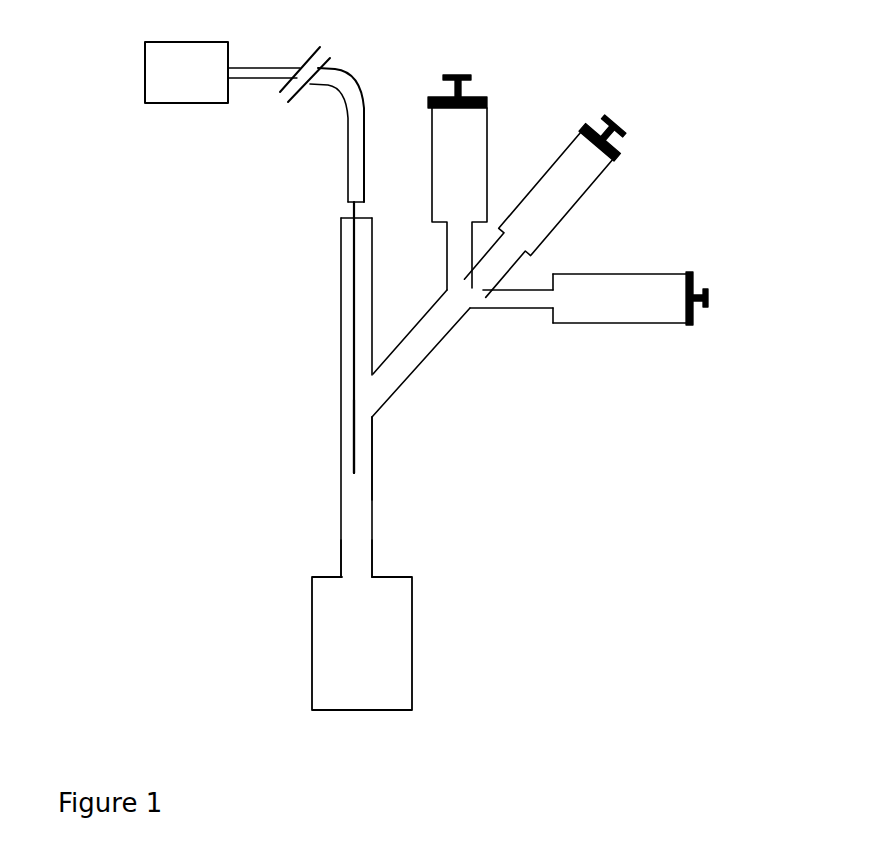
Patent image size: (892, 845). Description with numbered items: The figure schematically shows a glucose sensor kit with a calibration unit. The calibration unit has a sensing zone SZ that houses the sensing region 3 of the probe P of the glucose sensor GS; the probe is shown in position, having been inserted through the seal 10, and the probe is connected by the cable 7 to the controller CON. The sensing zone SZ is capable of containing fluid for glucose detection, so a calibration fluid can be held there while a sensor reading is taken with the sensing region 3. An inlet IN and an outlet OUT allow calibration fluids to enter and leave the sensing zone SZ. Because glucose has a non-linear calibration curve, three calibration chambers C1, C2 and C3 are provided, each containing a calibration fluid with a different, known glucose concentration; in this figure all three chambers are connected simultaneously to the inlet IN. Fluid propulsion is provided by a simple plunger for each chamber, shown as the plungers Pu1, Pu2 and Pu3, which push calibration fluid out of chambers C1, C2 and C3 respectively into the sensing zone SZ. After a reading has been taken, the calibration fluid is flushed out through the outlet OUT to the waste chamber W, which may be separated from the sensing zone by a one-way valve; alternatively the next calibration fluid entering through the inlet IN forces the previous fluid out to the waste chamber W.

The controller CON is at (186, 72).
The glucose sensor GS is at (353, 70).
The cable 7 is at (347, 117).
The seal 10 is at (343, 222).
The probe P is at (355, 325).
The sensing region 3 is at (358, 455).
The inlet IN is at (368, 388).
The sensing zone SZ is at (378, 450).
The outlet OUT is at (358, 577).
The waste chamber W is at (362, 643).
The calibration chamber C1 is at (457, 193).
The calibration chamber C2 is at (539, 214).
The calibration chamber C3 is at (623, 298).
The plunger Pu1 is at (472, 92).
The plunger Pu2 is at (617, 137).
The plunger Pu3 is at (693, 309).